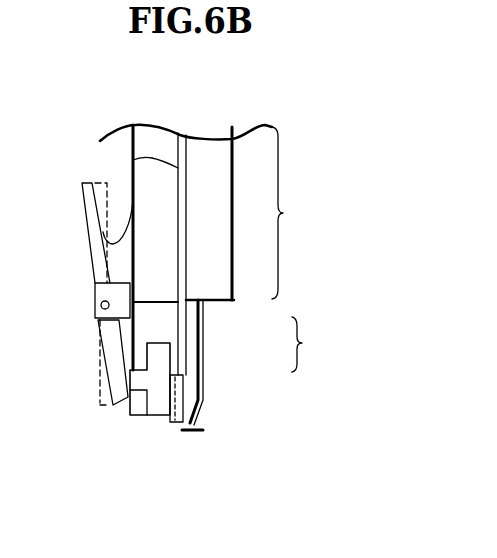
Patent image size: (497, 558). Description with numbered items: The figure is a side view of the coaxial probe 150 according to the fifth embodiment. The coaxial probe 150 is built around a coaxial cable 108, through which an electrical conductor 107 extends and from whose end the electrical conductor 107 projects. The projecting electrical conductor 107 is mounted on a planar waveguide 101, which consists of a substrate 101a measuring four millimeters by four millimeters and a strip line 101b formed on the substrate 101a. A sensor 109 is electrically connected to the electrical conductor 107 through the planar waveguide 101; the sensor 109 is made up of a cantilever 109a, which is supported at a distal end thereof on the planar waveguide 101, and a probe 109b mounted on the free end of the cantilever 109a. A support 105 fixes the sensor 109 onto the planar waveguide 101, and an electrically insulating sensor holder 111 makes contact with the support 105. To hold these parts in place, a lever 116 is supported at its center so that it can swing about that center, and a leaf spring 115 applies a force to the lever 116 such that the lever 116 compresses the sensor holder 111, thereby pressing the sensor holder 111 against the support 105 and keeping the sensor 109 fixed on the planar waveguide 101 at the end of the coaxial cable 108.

The coaxial probe 150 is at (357, 164).
The coaxial cable 108 is at (305, 213).
The electrical conductor 107 is at (133, 160).
The leaf spring 115 is at (92, 254).
The lever 116 is at (110, 348).
The planar waveguide 101 is at (261, 279).
The substrate 101a is at (183, 358).
The strip line 101b is at (173, 322).
The support 105 is at (162, 415).
The sensor holder 111 is at (140, 417).
The sensor 109 is at (195, 455).
The cantilever 109a is at (175, 427).
The probe 109b is at (195, 430).